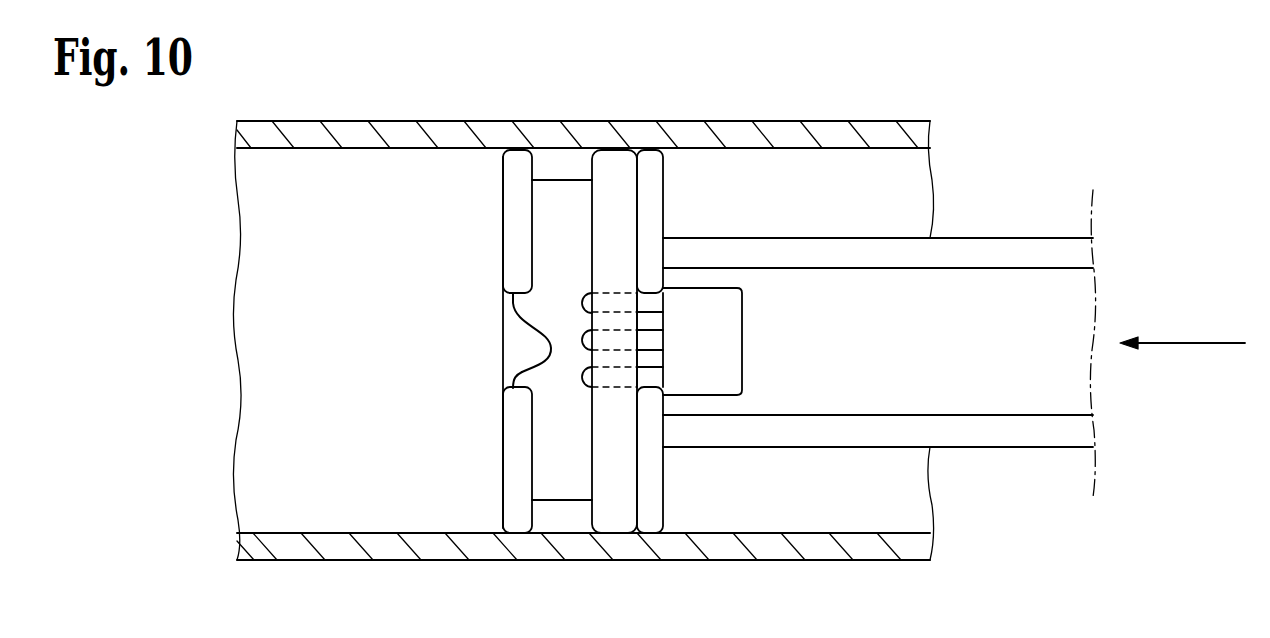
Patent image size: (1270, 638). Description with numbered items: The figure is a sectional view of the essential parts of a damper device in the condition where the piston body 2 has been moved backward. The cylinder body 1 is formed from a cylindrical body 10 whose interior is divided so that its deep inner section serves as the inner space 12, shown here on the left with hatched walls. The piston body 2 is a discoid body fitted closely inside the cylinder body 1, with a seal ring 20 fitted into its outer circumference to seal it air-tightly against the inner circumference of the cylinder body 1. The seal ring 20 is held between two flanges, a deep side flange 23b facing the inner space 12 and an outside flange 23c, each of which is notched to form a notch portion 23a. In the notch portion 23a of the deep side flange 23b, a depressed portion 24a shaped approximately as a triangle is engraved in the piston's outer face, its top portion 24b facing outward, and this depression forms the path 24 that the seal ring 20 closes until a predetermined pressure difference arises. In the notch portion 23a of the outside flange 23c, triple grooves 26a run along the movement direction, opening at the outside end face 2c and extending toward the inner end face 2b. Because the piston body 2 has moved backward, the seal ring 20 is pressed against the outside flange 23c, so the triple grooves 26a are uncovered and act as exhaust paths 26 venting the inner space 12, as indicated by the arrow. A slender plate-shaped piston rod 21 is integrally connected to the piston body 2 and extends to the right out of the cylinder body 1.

The cylinder body 1 is at (583, 303).
The cylindrical body 10 is at (583, 303).
The inner space 12 is at (292, 356).
The piston body 2 is at (625, 334).
The inner end face 2b is at (497, 503).
The outside end face 2c is at (660, 503).
The seal ring 20 is at (612, 160).
The piston rod 21 is at (990, 238).
The notch portion 23a is at (501, 325).
The deep side flange 23b is at (506, 170).
The outside flange 23c is at (650, 178).
The path 24 is at (463, 353).
The depressed portion 24a is at (532, 342).
The top portion 24b is at (513, 375).
The exhaust path 26 is at (756, 341).
The triple grooves 26a is at (652, 377).